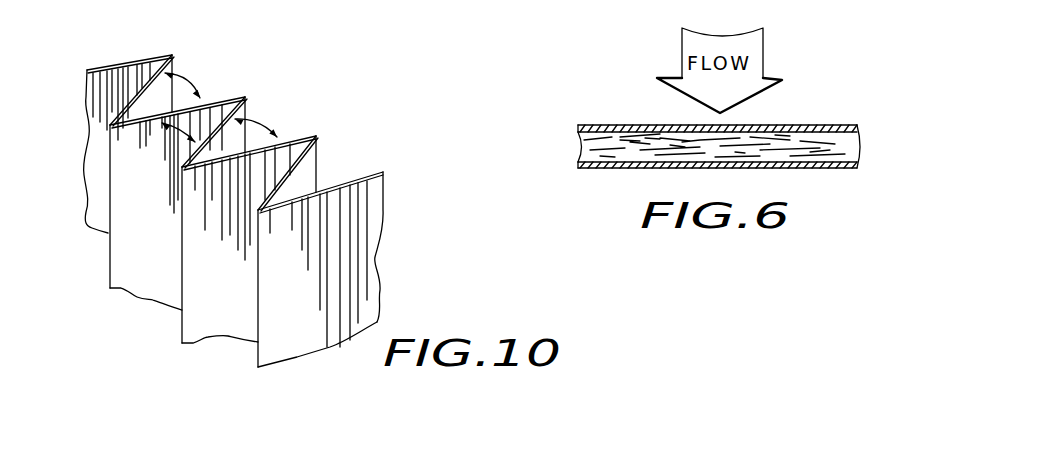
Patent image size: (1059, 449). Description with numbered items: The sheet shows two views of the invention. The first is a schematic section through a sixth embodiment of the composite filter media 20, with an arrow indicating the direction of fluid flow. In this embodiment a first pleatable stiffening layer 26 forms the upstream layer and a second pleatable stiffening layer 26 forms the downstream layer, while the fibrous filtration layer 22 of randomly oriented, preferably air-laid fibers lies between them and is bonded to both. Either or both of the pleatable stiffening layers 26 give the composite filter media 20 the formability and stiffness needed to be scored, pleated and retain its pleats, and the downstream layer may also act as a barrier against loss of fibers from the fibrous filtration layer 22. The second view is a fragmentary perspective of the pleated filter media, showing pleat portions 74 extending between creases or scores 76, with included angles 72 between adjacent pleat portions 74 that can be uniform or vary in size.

In FIG. 6, the composite filter media 20 is at (696, 123).
In FIG. 6, the fibrous filtration layer 22 is at (580, 148).
In FIG. 6, the pleatable stiffening layer 26 is at (628, 127).
In FIG. 10, the included angle 72 is at (192, 77).
In FIG. 10, the pleat portion 74 is at (124, 260).
In FIG. 10, the crease or score 76 is at (97, 178).